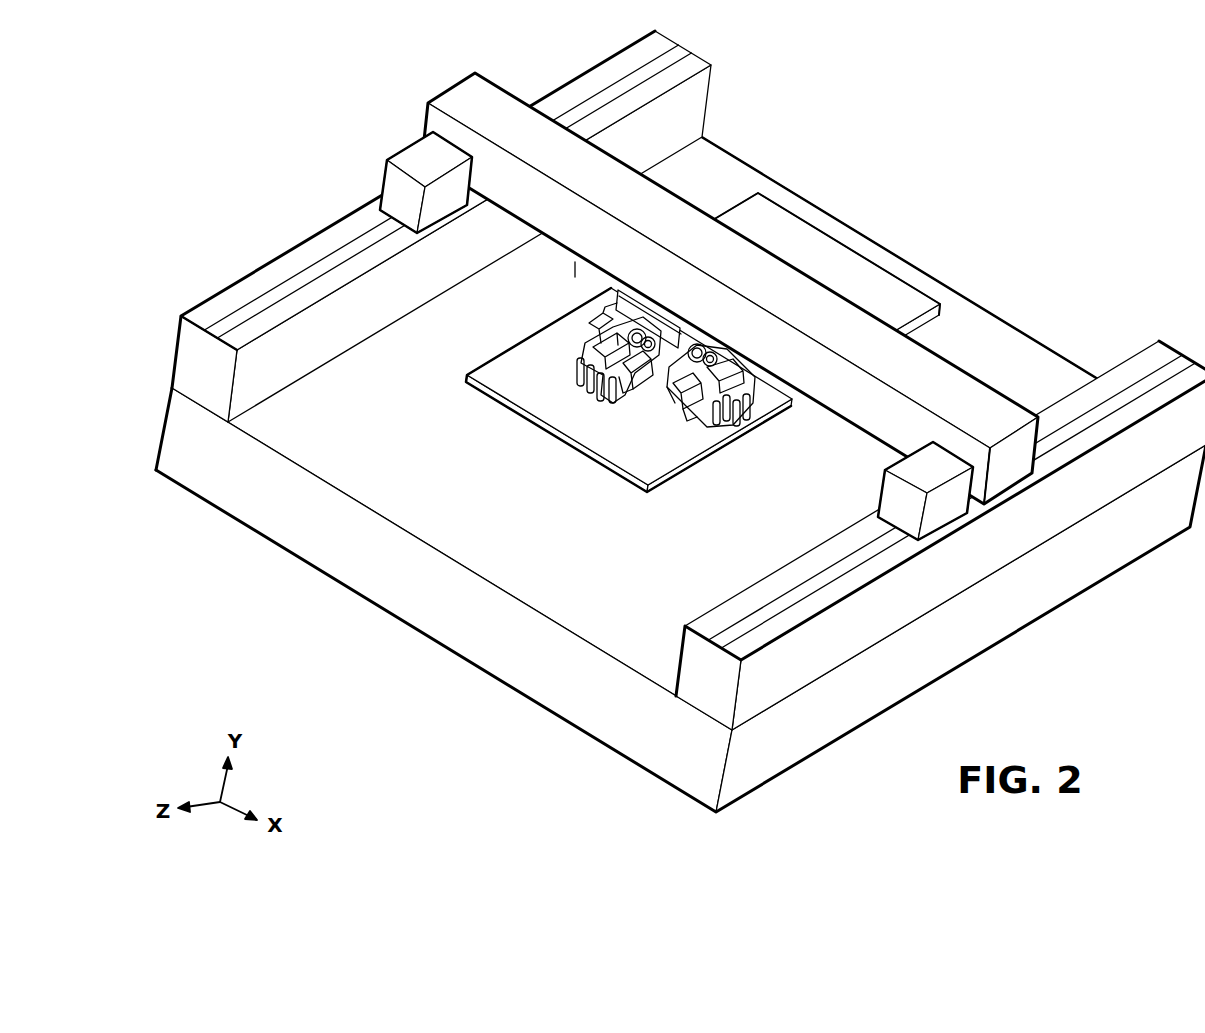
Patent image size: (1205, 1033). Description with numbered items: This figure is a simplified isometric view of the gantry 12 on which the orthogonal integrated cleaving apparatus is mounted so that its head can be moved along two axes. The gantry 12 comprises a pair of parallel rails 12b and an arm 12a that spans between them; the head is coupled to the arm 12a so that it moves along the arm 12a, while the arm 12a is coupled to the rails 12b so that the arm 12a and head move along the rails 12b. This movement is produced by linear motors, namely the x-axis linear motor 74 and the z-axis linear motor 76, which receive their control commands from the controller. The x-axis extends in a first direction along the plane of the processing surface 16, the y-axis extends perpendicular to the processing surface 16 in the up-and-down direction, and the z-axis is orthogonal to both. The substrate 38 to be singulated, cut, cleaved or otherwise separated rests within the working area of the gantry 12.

The gantry 12 is at (350, 624).
The arm 12a is at (730, 288).
The rails 12b is at (295, 273).
The processing surface 16 is at (362, 476).
The substrate 38 is at (815, 247).
The x-axis linear motor 74 is at (583, 278).
The z-axis linear motor 76 is at (412, 150).